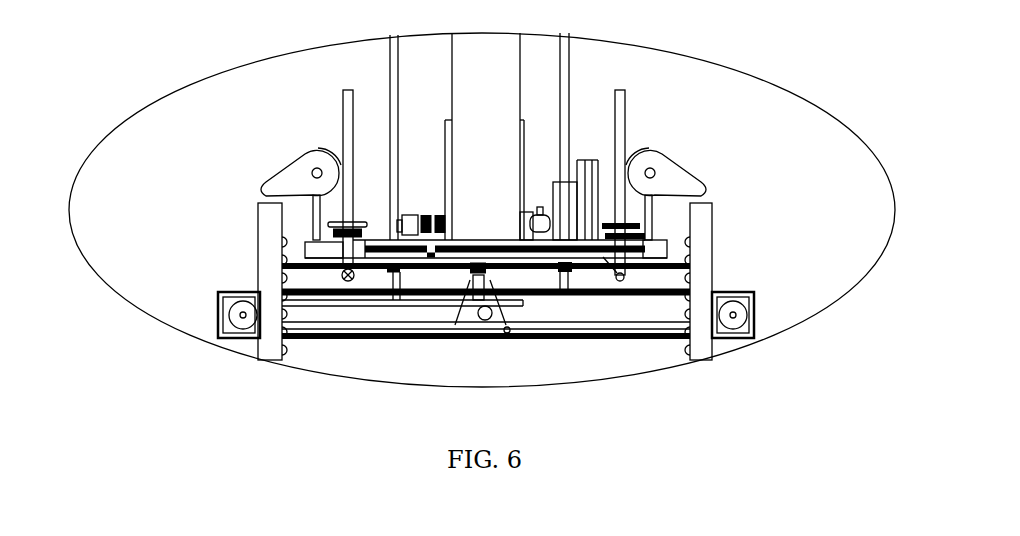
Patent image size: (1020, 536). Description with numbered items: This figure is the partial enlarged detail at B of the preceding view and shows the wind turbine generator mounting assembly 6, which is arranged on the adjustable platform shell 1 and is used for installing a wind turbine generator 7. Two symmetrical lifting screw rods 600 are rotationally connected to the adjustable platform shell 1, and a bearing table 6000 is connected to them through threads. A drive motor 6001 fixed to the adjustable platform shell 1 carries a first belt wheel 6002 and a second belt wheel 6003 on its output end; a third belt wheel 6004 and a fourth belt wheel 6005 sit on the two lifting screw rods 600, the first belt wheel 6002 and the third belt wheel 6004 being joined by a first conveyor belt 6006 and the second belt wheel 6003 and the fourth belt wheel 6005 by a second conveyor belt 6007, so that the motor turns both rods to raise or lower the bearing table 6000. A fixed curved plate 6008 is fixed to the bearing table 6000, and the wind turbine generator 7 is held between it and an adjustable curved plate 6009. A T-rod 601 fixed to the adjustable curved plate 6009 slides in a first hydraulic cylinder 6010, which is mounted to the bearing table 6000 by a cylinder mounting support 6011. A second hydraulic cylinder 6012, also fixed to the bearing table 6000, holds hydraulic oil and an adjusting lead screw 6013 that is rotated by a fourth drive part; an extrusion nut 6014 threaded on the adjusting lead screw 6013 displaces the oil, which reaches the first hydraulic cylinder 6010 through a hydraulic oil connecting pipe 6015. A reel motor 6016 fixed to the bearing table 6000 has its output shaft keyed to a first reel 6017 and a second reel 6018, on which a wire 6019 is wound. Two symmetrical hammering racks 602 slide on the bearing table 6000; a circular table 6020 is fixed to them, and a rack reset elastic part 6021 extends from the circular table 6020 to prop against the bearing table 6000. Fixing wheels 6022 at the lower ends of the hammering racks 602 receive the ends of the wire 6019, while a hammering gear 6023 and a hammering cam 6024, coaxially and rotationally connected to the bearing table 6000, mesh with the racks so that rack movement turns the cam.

The adjustable platform shell 1 is at (754, 318).
The wind turbine generator mounting assembly 6 is at (668, 252).
The wind turbine generator 7 is at (487, 52).
The detail B is at (893, 192).
The lifting screw rod 600 is at (598, 41).
The T-rod 601 is at (528, 218).
The hammering rack 602 is at (343, 117).
The bearing table 6000 is at (640, 257).
The drive motor 6001 is at (473, 300).
The first belt wheel 6002 is at (470, 275).
The second belt wheel 6003 is at (497, 303).
The third belt wheel 6004 is at (395, 272).
The fourth belt wheel 6005 is at (568, 272).
The first conveyor belt 6006 is at (418, 272).
The second conveyor belt 6007 is at (522, 262).
The fixed curved plate 6008 is at (448, 120).
The adjustable curved plate 6009 is at (527, 120).
The first hydraulic cylinder 6010 is at (640, 224).
The cylinder mounting support 6011 is at (645, 236).
The second hydraulic cylinder 6012 is at (548, 224).
The adjusting lead screw 6013 is at (598, 163).
The extrusion nut 6014 is at (600, 193).
The hydraulic oil connecting pipe 6015 is at (560, 182).
The reel motor 6016 is at (404, 215).
The first reel 6017 is at (425, 215).
The second reel 6018 is at (440, 215).
The wire 6019 is at (368, 250).
The circular table 6020 is at (328, 224).
The rack reset elastic part 6021 is at (303, 236).
The fixing wheel 6022 is at (341, 273).
The hammering gear 6023 is at (310, 153).
The hammering cam 6024 is at (300, 176).